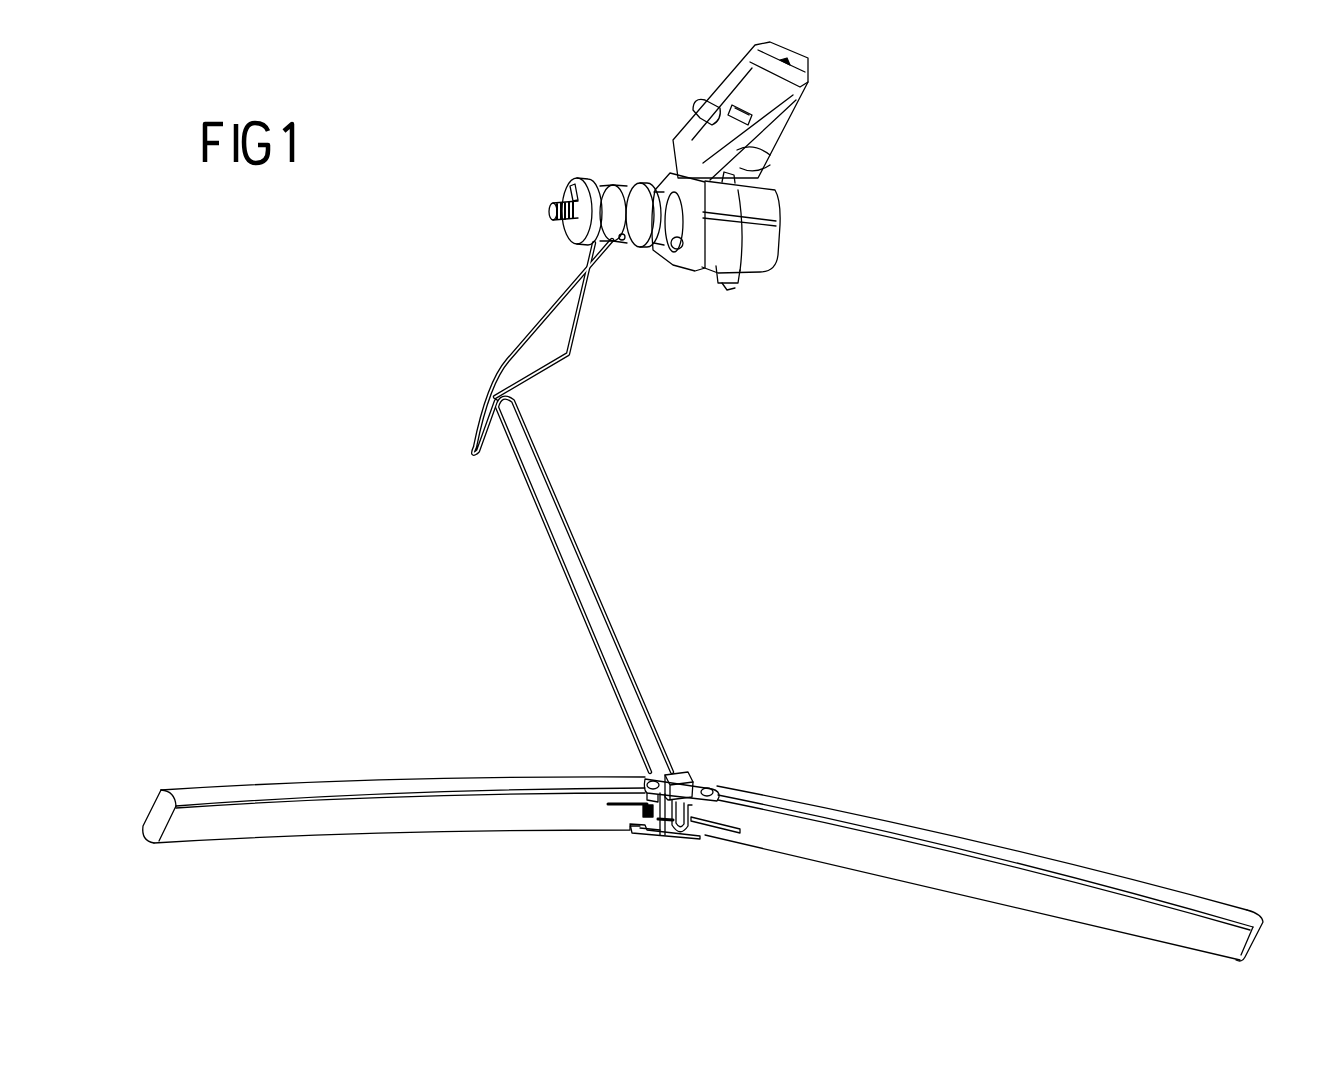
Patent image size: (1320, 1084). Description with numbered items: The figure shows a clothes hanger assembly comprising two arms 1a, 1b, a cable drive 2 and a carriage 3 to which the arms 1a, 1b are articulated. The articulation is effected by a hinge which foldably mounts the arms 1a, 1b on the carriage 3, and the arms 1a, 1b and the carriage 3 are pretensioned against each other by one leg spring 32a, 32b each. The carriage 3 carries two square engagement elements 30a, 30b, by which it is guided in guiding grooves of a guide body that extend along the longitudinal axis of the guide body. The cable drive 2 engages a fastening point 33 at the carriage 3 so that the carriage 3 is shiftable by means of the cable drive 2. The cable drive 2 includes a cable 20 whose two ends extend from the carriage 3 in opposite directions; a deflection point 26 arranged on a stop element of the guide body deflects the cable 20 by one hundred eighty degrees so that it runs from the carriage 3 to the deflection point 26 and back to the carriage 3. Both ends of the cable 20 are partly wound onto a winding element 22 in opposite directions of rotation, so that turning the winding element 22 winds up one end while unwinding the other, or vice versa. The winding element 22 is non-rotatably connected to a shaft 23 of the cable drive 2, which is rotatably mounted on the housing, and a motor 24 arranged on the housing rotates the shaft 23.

The arm 1a is at (352, 806).
The arm 1b is at (893, 853).
The cable drive 2 is at (665, 380).
The carriage 3 is at (676, 791).
The cable 20 is at (477, 429).
The winding element 22 is at (568, 230).
The shaft 23 is at (557, 207).
The motor 24 is at (682, 128).
The deflection point 26 is at (681, 833).
The square engagement element 30a is at (652, 838).
The square engagement element 30b is at (683, 781).
The leg spring 32a is at (643, 805).
The leg spring 32b is at (728, 828).
The fastening point 33 is at (656, 800).